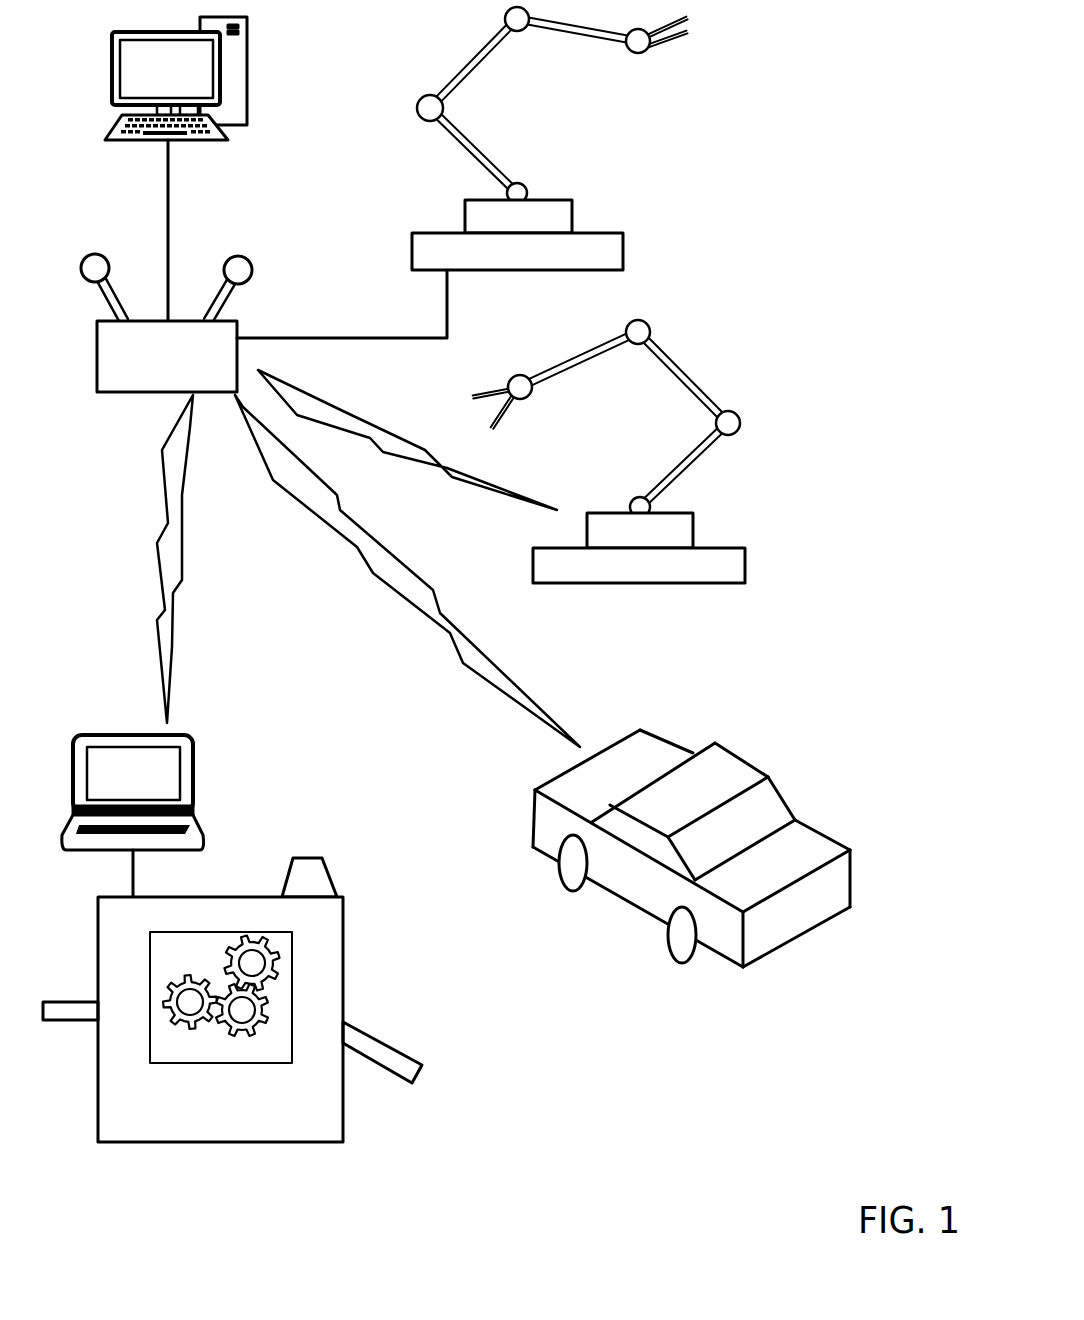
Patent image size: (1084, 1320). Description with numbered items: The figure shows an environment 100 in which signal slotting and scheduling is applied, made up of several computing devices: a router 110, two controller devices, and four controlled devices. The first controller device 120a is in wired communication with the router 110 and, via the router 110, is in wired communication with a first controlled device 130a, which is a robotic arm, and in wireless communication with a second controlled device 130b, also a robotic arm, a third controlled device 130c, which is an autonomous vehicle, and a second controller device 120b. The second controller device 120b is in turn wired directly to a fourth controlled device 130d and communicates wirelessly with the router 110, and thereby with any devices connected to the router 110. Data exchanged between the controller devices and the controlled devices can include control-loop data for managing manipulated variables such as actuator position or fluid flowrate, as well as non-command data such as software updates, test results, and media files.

The environment 100 is at (840, 91).
The router 110 is at (252, 266).
The first controller device 120a is at (247, 76).
The second controller device 120b is at (193, 772).
The first controlled device 130a is at (623, 250).
The second controlled device 130b is at (687, 368).
The third controlled device 130c is at (743, 758).
The fourth controlled device 130d is at (343, 967).